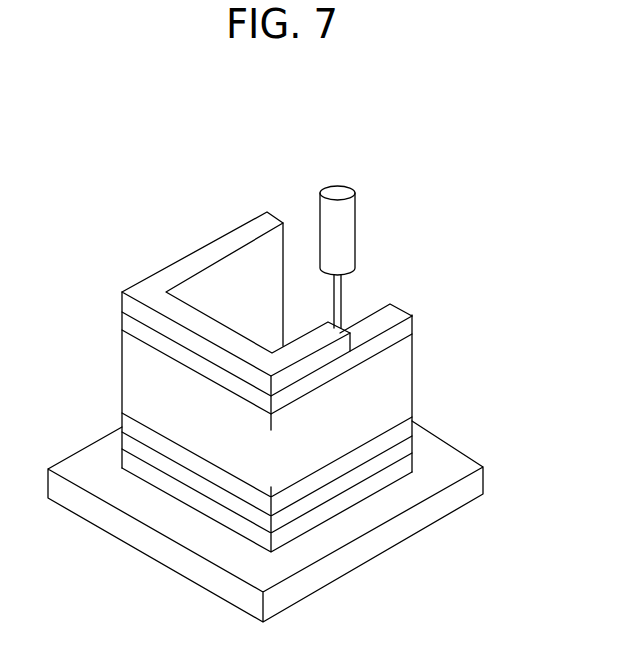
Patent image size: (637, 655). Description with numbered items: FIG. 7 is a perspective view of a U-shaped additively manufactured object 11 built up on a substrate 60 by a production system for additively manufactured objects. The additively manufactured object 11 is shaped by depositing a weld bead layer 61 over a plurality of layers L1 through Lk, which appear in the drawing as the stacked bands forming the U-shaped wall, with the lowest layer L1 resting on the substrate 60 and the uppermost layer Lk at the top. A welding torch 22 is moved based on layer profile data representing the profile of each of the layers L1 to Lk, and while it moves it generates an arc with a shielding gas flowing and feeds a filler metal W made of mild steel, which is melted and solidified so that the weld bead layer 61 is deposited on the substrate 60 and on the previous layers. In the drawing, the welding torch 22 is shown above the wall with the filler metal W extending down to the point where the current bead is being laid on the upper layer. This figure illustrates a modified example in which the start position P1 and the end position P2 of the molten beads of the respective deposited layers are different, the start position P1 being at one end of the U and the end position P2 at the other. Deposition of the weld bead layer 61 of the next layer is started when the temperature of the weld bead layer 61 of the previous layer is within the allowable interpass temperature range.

The additively manufactured object 11 is at (194, 250).
The welding torch 22 is at (348, 221).
The substrate 60 is at (350, 530).
The weld bead layer 61 is at (373, 447).
The filler metal (wire) W is at (343, 293).
The start position P1 is at (268, 216).
The end position P2 is at (392, 314).
The first layer L1 is at (130, 461).
The k-th layer Lk is at (128, 306).